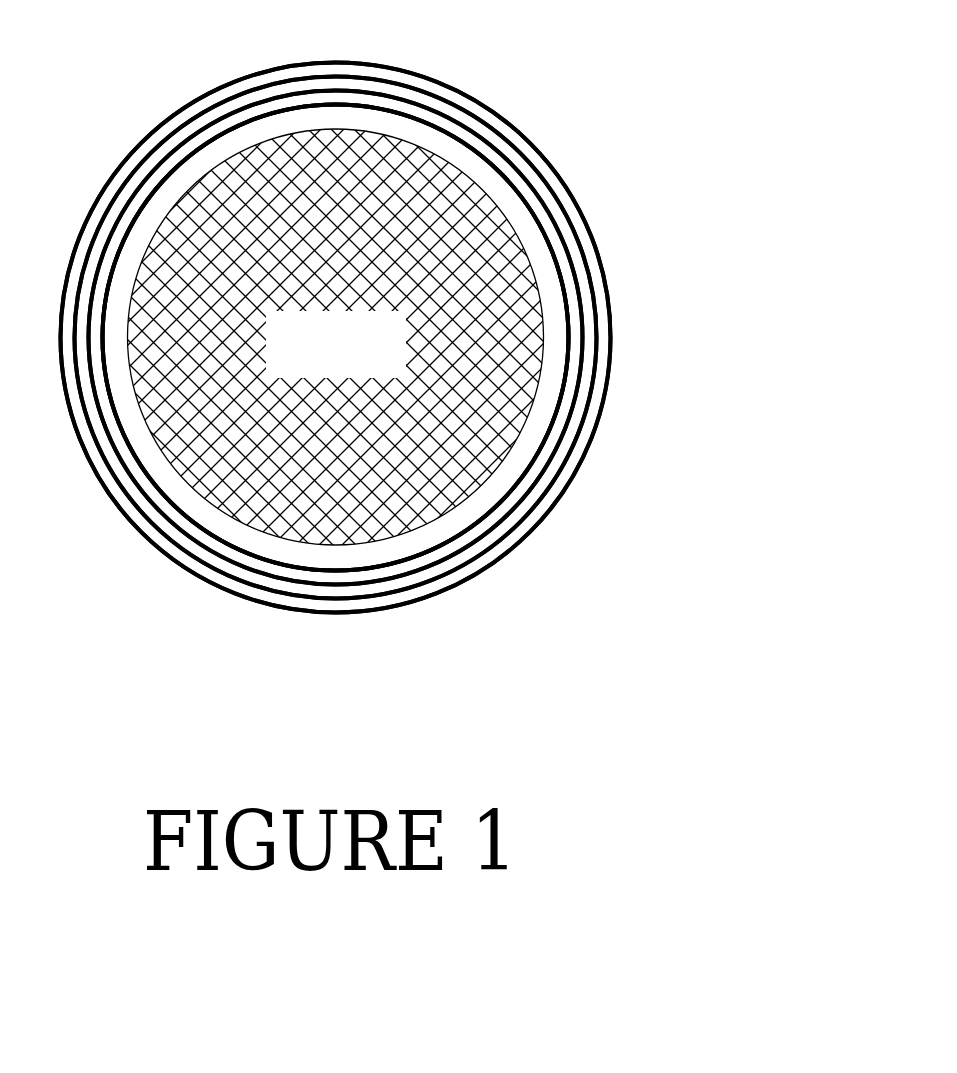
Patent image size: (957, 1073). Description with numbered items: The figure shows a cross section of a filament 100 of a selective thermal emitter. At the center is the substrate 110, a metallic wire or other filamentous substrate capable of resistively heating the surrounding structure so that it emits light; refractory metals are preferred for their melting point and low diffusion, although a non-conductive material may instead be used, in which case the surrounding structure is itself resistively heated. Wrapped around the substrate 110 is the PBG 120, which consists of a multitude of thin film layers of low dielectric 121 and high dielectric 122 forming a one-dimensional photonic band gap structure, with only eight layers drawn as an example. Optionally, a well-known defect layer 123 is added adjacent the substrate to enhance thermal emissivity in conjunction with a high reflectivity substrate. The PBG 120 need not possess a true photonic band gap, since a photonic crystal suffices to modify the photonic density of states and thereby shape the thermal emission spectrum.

The filament 100 is at (451, 423).
The substrate 110 is at (372, 361).
The PBG 120 is at (340, 62).
The low dielectric 121 is at (572, 293).
The high dielectric 122 is at (553, 403).
The defect layer 123 is at (530, 238).